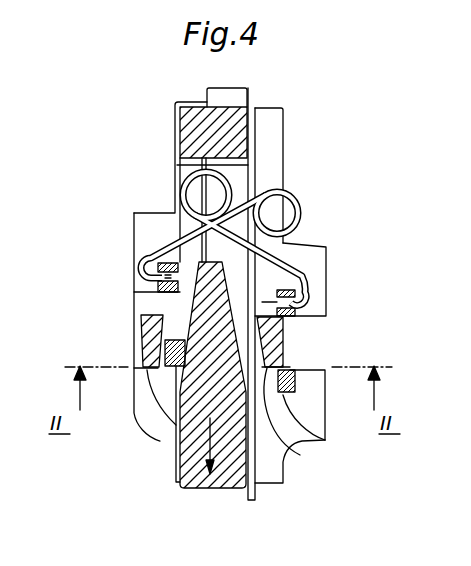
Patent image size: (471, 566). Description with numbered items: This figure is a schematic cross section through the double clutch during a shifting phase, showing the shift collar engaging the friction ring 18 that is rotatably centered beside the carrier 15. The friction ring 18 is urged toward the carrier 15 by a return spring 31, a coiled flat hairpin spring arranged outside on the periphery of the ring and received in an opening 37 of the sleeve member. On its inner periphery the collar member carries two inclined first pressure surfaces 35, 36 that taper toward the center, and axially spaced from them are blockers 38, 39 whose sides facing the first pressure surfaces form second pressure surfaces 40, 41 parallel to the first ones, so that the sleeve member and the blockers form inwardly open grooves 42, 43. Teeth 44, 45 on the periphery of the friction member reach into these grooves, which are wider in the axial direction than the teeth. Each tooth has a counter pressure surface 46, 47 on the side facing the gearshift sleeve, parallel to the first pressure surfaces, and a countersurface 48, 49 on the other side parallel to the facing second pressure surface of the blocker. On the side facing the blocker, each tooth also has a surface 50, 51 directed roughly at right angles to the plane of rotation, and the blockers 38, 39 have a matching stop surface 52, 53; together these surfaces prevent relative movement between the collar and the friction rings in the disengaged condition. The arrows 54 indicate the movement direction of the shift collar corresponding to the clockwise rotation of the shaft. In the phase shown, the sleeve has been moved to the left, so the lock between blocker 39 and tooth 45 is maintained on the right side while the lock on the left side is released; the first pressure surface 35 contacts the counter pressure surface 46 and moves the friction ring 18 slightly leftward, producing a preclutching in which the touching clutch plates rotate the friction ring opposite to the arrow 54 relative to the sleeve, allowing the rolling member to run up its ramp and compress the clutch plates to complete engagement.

The carrier 15 is at (235, 96).
The friction ring 18 is at (170, 212).
The return spring 31 is at (300, 200).
The first pressure surface 35 is at (134, 262).
The first pressure surface 36 is at (280, 280).
The opening 37 is at (233, 168).
The blocker 38 is at (176, 297).
The blocker 39 is at (297, 300).
The second pressure surface 40 is at (158, 276).
The second pressure surface 41 is at (272, 345).
The groove 42 is at (150, 326).
The groove 43 is at (285, 326).
The tooth 44 is at (168, 368).
The tooth 45 is at (292, 397).
The counter pressure surface 46 is at (178, 405).
The counter pressure surface 47 is at (326, 442).
The countersurface 48 is at (170, 334).
The countersurface 49 is at (296, 378).
The surface 50 is at (187, 350).
The surface 51 is at (290, 368).
The stop surface 52 is at (152, 368).
The stop surface 53 is at (298, 458).
The arrow 54 is at (205, 453).